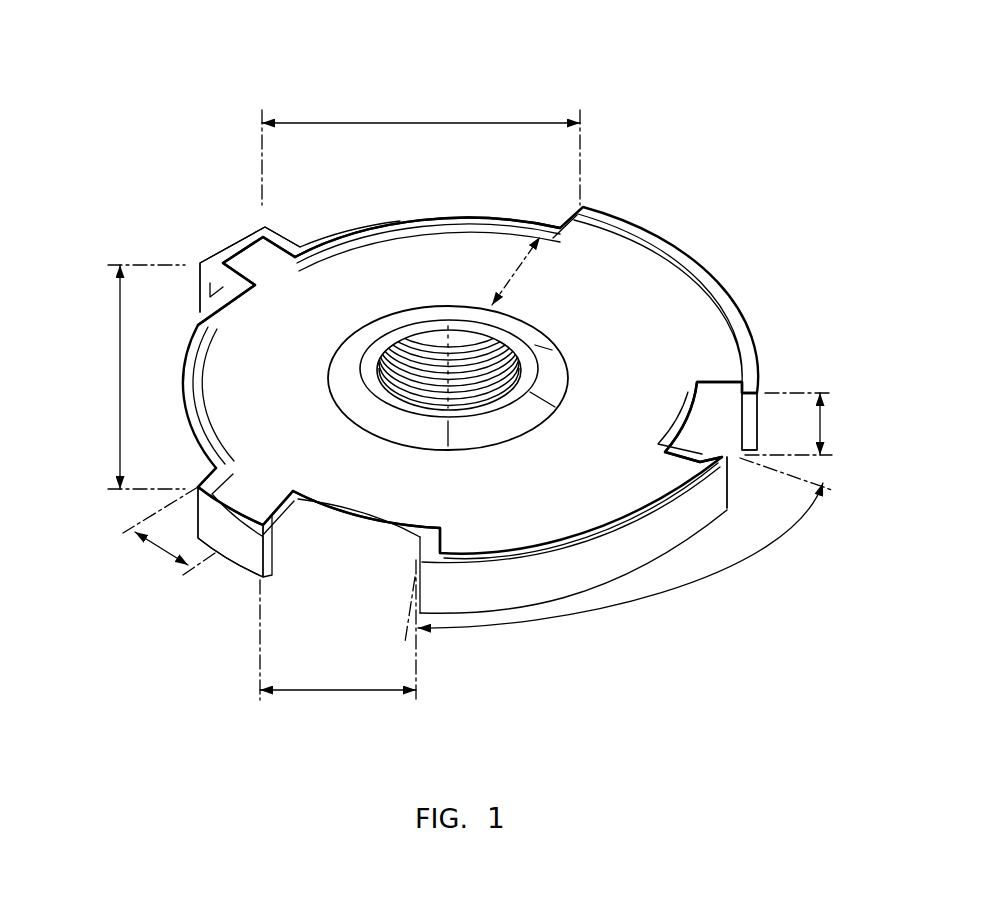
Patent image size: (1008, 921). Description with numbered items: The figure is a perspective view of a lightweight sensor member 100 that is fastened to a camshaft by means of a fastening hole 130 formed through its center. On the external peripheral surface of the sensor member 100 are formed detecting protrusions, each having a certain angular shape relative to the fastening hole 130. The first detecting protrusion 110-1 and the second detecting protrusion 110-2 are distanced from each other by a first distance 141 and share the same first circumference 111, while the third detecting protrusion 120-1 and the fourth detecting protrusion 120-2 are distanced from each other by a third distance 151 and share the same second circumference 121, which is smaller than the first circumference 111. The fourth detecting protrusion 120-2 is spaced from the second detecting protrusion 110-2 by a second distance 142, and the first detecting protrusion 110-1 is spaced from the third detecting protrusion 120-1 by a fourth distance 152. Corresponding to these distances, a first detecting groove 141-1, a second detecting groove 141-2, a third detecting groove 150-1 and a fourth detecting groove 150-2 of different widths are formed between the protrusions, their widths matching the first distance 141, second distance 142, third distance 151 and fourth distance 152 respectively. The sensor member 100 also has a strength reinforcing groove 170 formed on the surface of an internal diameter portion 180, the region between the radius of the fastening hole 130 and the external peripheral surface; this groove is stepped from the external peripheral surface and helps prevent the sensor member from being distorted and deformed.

The lightweight sensor member 100 is at (198, 30).
The first detecting protrusion 110-1 is at (700, 264).
The second detecting protrusion 110-2 is at (575, 578).
The first circumference 111 is at (496, 630).
The third detecting protrusion 120-1 is at (243, 222).
The fourth detecting protrusion 120-2 is at (240, 548).
The second circumference 121 is at (238, 553).
The fastening hole 130 is at (457, 344).
The first distance 141 is at (821, 425).
The first detecting groove 141-1 is at (734, 421).
The second detecting groove 141-2 is at (381, 568).
The second distance 142 is at (296, 692).
The third detecting groove 150-1 is at (179, 332).
The fourth detecting groove 150-2 is at (538, 205).
The third distance 151 is at (120, 432).
The fourth distance 152 is at (371, 123).
The strength reinforcing groove 170 is at (610, 470).
The internal diameter portion 180 is at (515, 273).